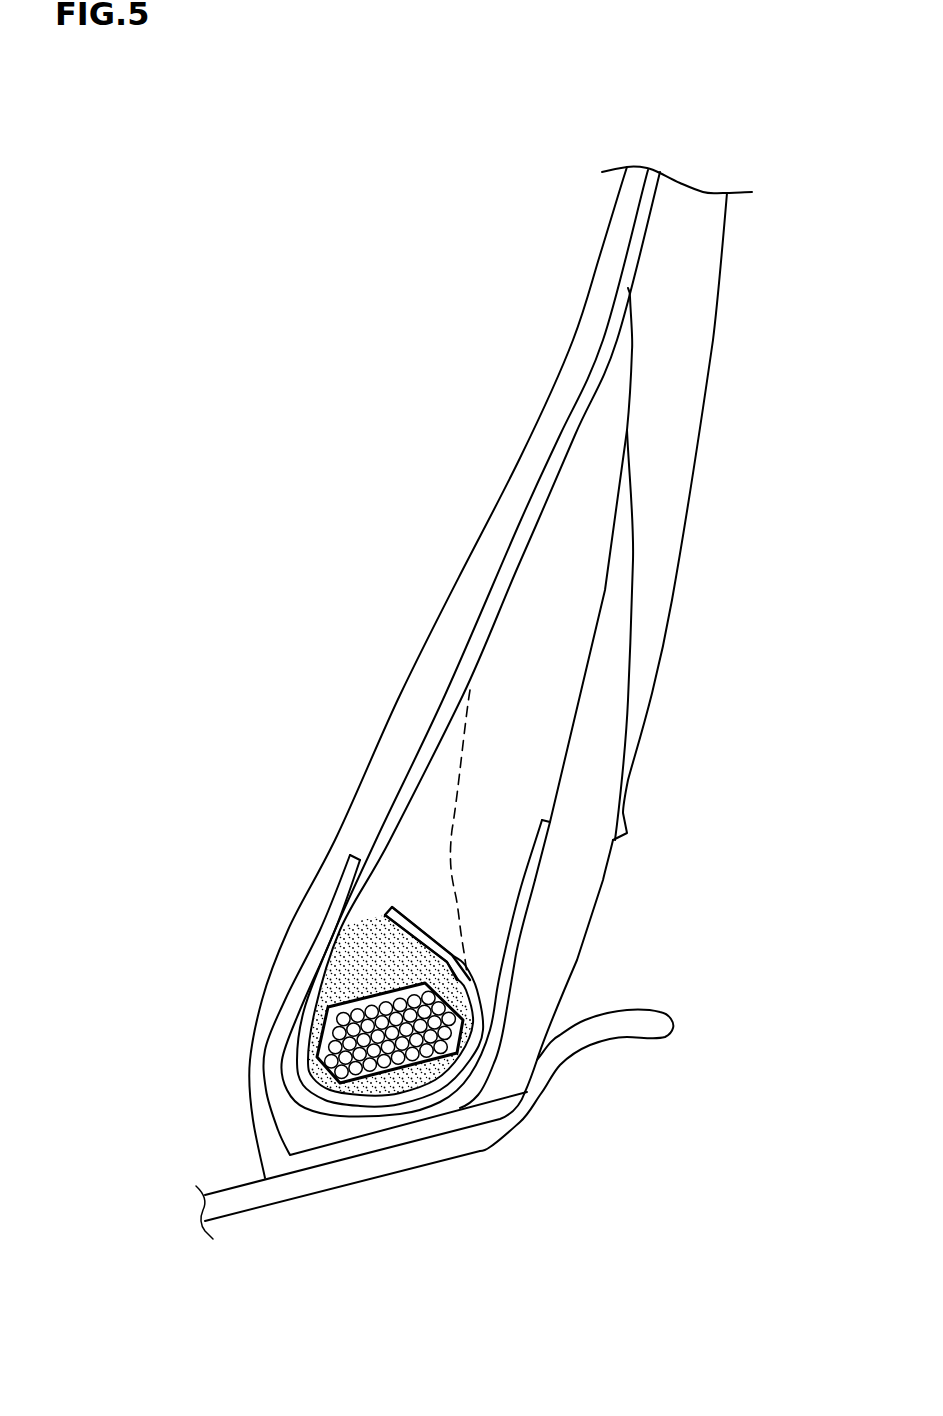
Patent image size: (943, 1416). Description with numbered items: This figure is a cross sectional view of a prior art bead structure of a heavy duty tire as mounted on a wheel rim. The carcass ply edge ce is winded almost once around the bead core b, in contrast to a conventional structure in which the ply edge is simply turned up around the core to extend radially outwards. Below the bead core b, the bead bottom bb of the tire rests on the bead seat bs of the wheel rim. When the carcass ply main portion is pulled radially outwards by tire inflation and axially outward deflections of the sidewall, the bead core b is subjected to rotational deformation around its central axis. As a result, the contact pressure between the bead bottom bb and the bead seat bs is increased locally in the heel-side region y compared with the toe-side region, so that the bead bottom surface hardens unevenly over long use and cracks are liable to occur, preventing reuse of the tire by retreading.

The carcass ply edge ce is at (410, 923).
The bead core b is at (387, 1032).
The bead bottom bb is at (393, 1140).
The bead seat bs is at (258, 1183).
The heel-side region y is at (440, 1133).